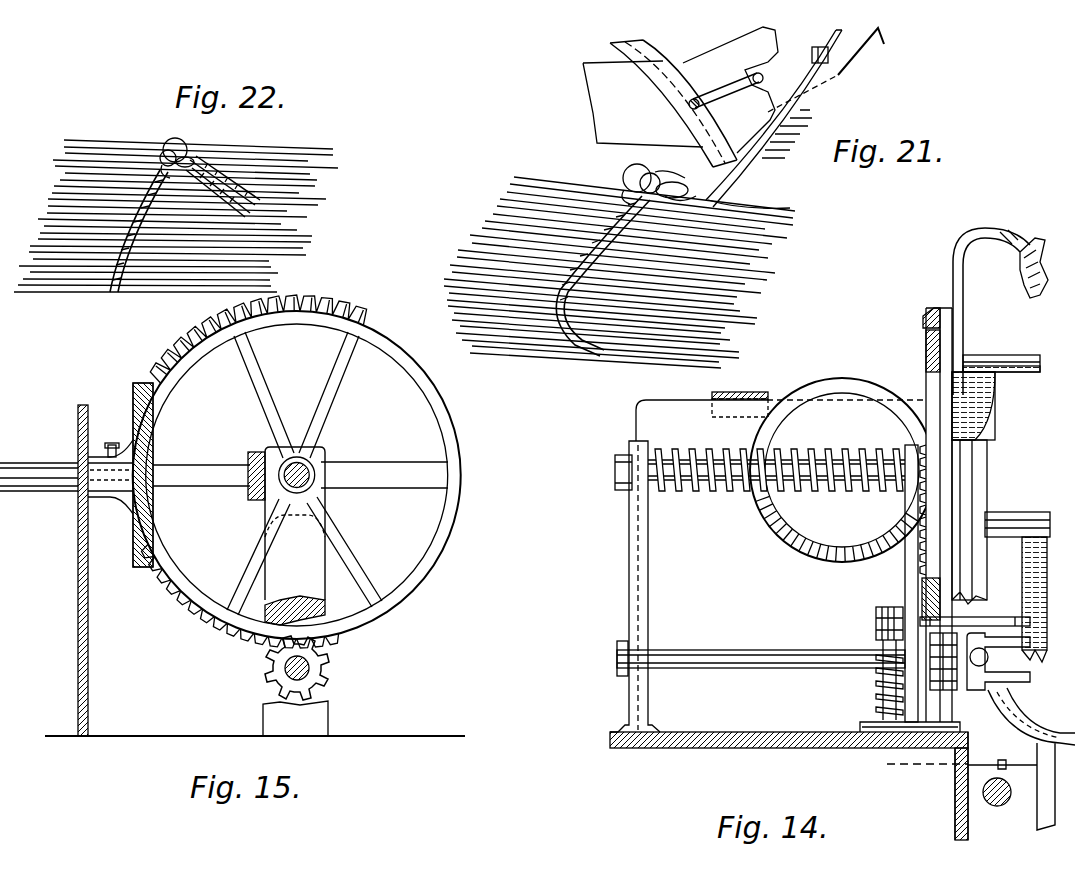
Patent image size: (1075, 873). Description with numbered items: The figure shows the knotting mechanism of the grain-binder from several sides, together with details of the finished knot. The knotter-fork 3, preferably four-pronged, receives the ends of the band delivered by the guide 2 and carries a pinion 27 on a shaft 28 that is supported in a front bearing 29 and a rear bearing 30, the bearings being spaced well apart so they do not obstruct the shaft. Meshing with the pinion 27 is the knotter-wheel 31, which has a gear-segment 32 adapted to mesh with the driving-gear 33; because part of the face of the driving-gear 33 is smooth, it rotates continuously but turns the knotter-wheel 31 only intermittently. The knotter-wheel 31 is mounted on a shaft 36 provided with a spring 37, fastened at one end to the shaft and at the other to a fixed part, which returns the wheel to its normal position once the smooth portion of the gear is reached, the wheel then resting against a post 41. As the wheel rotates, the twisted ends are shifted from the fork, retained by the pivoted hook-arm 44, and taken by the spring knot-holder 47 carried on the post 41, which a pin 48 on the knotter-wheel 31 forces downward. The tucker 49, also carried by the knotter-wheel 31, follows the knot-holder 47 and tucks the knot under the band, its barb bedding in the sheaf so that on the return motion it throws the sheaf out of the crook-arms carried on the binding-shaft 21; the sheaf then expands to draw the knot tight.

In FIG. 14, the guide 2 is at (1030, 722).
In FIG. 14, the knotter-fork 3 is at (998, 661).
In FIG. 14, the binding-shaft 21 is at (997, 807).
In FIG. 15, the pinion 27 is at (330, 672).
In FIG. 14, the pinion 27 is at (948, 692).
In FIG. 15, the shaft 28 is at (310, 664).
In FIG. 14, the shaft 28 is at (789, 672).
In FIG. 15, the front bearing 29 is at (328, 708).
In FIG. 14, the front bearing 29 is at (913, 704).
In FIG. 14, the rear bearing 30 is at (648, 690).
In FIG. 21, the knotter-wheel 31 is at (866, 52).
In FIG. 15, the knotter-wheel 31 is at (183, 556).
In FIG. 14, the knotter-wheel 31 is at (925, 382).
In FIG. 15, the gear-segment 32 is at (197, 356).
In FIG. 14, the gear-segment 32 is at (922, 316).
In FIG. 15, the driving-gear 33 is at (135, 415).
In FIG. 14, the driving-gear 33 is at (842, 470).
In FIG. 15, the shaft 36 is at (316, 474).
In FIG. 14, the shaft 36 is at (992, 468).
In FIG. 15, the spring 37 is at (291, 445).
In FIG. 14, the spring 37 is at (716, 450).
In FIG. 21, the post 41 is at (692, 212).
In FIG. 14, the post 41 is at (988, 497).
In FIG. 14, the hook-arm 44 is at (1032, 622).
In FIG. 21, the spring knot-holder 47 is at (663, 87).
In FIG. 14, the spring knot-holder 47 is at (1040, 580).
In FIG. 21, the pin 48 is at (722, 92).
In FIG. 21, the tucker 49 is at (800, 208).
In FIG. 14, the tucker 49 is at (1000, 300).